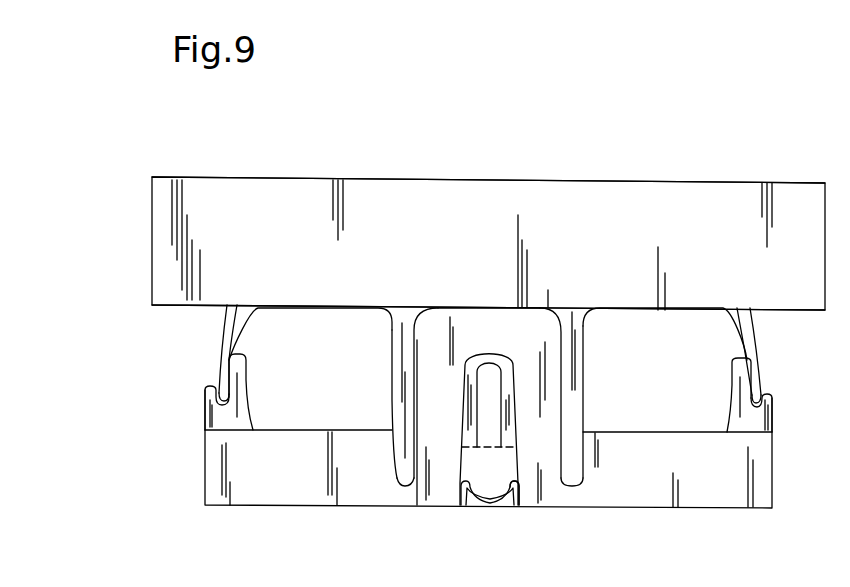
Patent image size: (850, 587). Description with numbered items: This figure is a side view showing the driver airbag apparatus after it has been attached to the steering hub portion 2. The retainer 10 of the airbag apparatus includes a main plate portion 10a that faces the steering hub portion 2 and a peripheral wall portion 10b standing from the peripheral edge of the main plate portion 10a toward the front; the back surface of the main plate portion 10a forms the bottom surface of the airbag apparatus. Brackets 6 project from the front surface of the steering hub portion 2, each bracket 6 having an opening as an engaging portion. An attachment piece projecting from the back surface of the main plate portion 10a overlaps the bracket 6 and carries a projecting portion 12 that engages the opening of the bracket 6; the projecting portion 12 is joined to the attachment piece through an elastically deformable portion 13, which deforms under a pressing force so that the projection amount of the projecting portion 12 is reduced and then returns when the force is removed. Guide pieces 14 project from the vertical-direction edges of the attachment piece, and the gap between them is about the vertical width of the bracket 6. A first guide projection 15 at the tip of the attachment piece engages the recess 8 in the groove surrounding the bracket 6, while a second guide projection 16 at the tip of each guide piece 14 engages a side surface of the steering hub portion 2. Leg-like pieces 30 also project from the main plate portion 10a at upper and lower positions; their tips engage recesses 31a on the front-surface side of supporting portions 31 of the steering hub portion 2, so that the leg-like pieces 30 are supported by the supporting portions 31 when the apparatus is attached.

The steering hub portion 2 is at (662, 510).
The bracket 6 is at (535, 325).
The recess 8 is at (508, 508).
The retainer 10 is at (757, 142).
The main plate portion 10a is at (320, 308).
The peripheral wall portion 10b is at (374, 177).
The projecting portion 12 is at (481, 354).
The elastically deformable portion 13 is at (468, 438).
The guide piece 14 is at (395, 373).
The first guide projection 15 is at (492, 507).
The second guide projection 16 is at (398, 487).
The leg-like piece 30 is at (220, 352).
The supporting portion 31 is at (205, 410).
The recess 31a is at (229, 396).